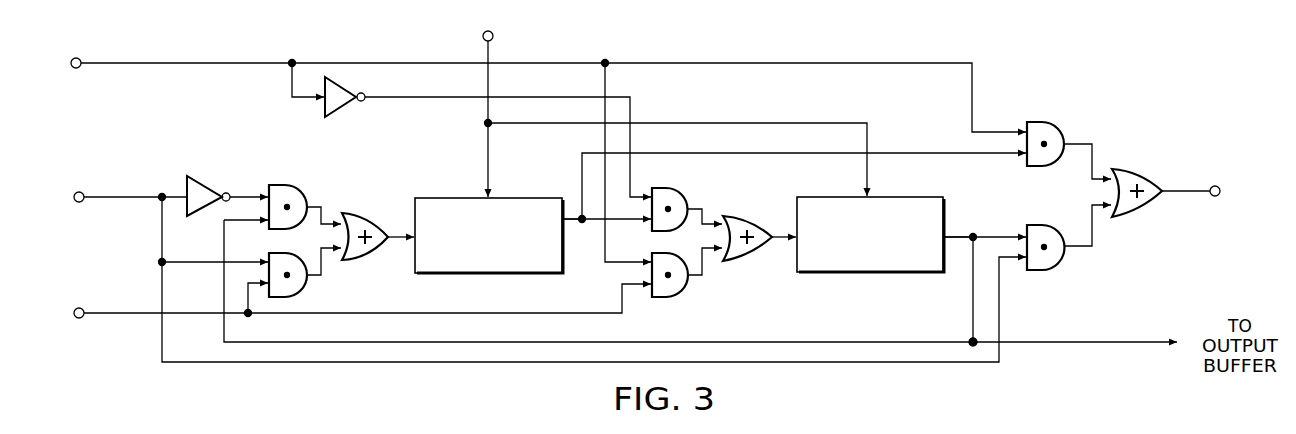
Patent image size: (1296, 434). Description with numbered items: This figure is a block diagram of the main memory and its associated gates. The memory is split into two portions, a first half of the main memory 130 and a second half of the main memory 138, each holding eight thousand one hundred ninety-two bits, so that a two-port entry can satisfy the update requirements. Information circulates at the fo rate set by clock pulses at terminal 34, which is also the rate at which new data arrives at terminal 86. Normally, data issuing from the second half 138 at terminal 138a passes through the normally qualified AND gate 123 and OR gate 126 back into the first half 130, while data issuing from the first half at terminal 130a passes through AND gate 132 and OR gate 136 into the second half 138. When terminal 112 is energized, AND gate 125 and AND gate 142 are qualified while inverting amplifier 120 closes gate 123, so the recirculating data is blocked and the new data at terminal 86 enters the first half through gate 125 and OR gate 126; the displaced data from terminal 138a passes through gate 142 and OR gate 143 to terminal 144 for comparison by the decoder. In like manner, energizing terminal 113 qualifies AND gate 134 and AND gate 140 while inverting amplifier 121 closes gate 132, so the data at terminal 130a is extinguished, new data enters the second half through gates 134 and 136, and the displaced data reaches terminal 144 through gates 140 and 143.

The terminal 113 is at (78, 68).
The inverting amplifier 121 is at (336, 112).
The terminal 34 is at (494, 36).
The terminal 112 is at (83, 187).
The inverting amplifier 120 is at (212, 183).
The AND gate 123 is at (300, 185).
The AND gate 125 is at (300, 290).
The OR gate 126 is at (372, 216).
The first half of the main memory 130 is at (505, 197).
The terminal 130a is at (585, 225).
The terminal 86 is at (88, 300).
The AND gate 132 is at (670, 188).
The AND gate 134 is at (688, 290).
The OR gate 136 is at (742, 216).
The second half of the main memory 138 is at (866, 274).
The terminal 138a is at (968, 341).
The AND gate 140 is at (1045, 122).
The AND gate 142 is at (1063, 260).
The OR gate 143 is at (1140, 172).
The terminal 144 is at (1220, 183).